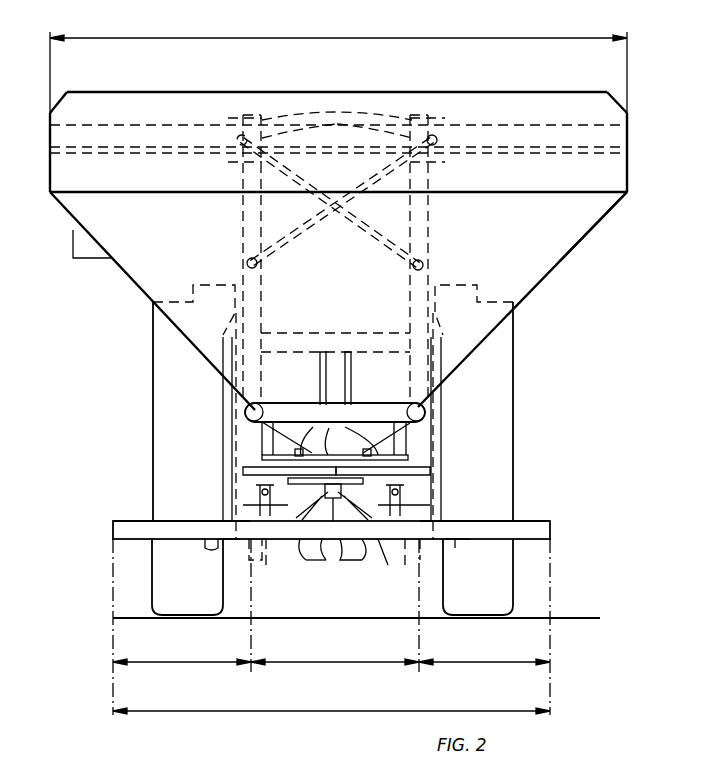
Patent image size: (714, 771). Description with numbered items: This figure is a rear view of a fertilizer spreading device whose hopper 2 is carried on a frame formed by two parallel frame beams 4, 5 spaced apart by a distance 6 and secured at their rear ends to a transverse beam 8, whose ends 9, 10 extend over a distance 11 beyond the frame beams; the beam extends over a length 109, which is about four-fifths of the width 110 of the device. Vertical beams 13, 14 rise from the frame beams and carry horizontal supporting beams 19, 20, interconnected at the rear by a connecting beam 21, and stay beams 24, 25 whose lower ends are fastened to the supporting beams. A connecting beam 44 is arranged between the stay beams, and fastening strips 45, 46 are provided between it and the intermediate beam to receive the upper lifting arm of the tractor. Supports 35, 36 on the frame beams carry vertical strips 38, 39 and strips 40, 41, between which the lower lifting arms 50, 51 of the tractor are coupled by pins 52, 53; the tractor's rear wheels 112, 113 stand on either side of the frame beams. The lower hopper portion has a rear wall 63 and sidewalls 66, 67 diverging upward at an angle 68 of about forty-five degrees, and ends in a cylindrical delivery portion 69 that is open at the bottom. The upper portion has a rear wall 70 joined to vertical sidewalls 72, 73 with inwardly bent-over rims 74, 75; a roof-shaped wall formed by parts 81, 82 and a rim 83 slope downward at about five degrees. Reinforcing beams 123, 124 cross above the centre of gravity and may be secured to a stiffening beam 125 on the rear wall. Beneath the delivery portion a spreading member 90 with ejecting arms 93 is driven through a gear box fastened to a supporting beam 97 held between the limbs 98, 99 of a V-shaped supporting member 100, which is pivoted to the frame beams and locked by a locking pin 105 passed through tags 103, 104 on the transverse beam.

The hopper 2 is at (505, 93).
The frame beam 4 is at (245, 541).
The frame beam 5 is at (420, 546).
The distance between frame beams 6 is at (334, 662).
The transverse beam 8 is at (113, 530).
The end of transverse beam 9 is at (127, 521).
The end of transverse beam 10 is at (550, 521).
The distance 11 is at (182, 662).
The vertical beam 13 is at (240, 433).
The vertical beam 14 is at (430, 436).
The horizontal supporting beam 19 is at (245, 411).
The horizontal supporting beam 20 is at (428, 412).
The connecting beam 21 is at (373, 410).
The stay beam 24 is at (243, 118).
The stay beam 25 is at (430, 118).
The support 35 is at (266, 548).
The support 36 is at (386, 565).
The vertical strip 38 is at (207, 540).
The vertical strip 39 is at (226, 546).
The strip 40 is at (455, 540).
The strip 41 is at (408, 500).
The connecting beam 44 is at (287, 333).
The fastening strip 45 is at (320, 370).
The fastening strip 46 is at (351, 372).
The lower lifting arm 50 is at (258, 490).
The lower lifting arm 51 is at (404, 489).
The pin 52 is at (255, 498).
The pin 53 is at (478, 500).
The rear wall 63 is at (590, 224).
The sidewall 66 is at (121, 270).
The sidewall 67 is at (543, 280).
The angle 68 is at (73, 246).
The cylindrical delivery portion 69 is at (313, 422).
The rear wall 70 is at (512, 184).
The sidewall 72 is at (50, 147).
The sidewall 73 is at (627, 155).
The bent-over rim 74 is at (59, 101).
The bent-over rim 75 is at (617, 101).
The roof-shaped wall part 81 is at (290, 126).
The roof-shaped wall part 82 is at (380, 126).
The rim 83 is at (337, 112).
The spreading member 90 is at (430, 468).
The ejecting arms 93 is at (250, 466).
The supporting beam 97 is at (338, 539).
The limb 98 is at (300, 540).
The limb 99 is at (360, 539).
The V-shaped supporting member 100 is at (323, 545).
The tag 103 is at (328, 561).
The tag 104 is at (352, 561).
The locking pin 105 is at (377, 545).
The length of transverse beam 109 is at (333, 711).
The width of device 110 is at (283, 38).
The rear wheel 112 is at (153, 377).
The rear wheel 113 is at (513, 370).
The reinforcing beam 123 is at (318, 166).
The reinforcing beam 124 is at (308, 236).
The stiffening beam 125 is at (118, 132).